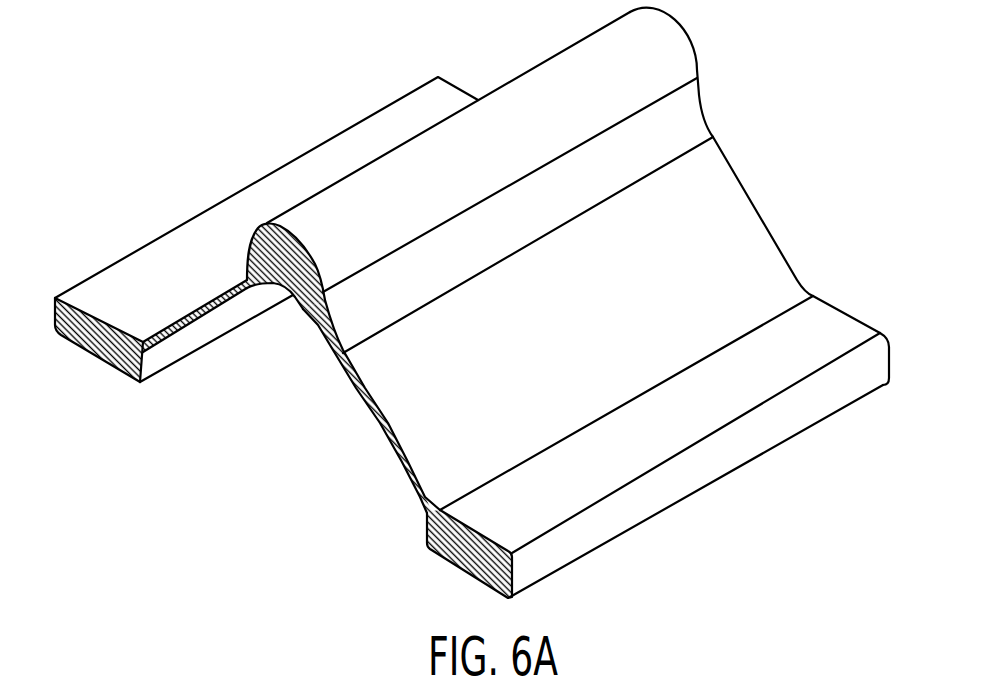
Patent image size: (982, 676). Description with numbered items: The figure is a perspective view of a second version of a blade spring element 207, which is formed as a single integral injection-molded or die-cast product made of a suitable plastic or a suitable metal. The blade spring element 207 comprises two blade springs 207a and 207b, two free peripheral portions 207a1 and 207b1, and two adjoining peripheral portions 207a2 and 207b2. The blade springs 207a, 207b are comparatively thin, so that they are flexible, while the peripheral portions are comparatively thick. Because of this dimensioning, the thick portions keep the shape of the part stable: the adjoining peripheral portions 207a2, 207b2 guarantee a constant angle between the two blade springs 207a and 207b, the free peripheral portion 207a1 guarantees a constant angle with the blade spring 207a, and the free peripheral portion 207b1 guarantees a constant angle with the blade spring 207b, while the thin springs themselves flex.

The blade spring element 207 is at (795, 155).
The blade spring 207a is at (750, 235).
The free peripheral portion 207a1 is at (448, 562).
The adjoining peripheral portion 207a2 is at (309, 287).
The blade spring 207b is at (195, 325).
The free peripheral portion 207b1 is at (72, 342).
The adjoining peripheral portion 207b2 is at (265, 222).